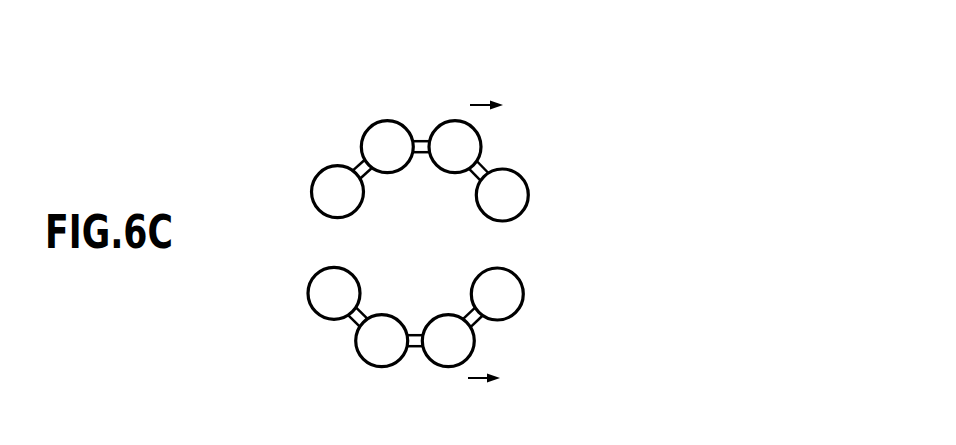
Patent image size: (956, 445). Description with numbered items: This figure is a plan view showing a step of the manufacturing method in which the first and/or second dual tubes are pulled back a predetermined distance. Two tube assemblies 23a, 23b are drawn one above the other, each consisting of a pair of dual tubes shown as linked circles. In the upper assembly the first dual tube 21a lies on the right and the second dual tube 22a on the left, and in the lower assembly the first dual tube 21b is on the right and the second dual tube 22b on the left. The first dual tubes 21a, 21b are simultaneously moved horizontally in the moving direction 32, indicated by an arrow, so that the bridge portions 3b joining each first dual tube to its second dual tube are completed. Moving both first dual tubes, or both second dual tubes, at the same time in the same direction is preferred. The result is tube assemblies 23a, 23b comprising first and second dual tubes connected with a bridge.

The bridge portion 3b is at (422, 140).
The moving direction 32 is at (478, 105).
The first dual tube 21a is at (472, 117).
The second dual tube 22a is at (371, 108).
The tube assembly 23a is at (604, 177).
The first dual tube 21b is at (535, 305).
The second dual tube 22b is at (368, 372).
The tube assembly 23b is at (619, 320).